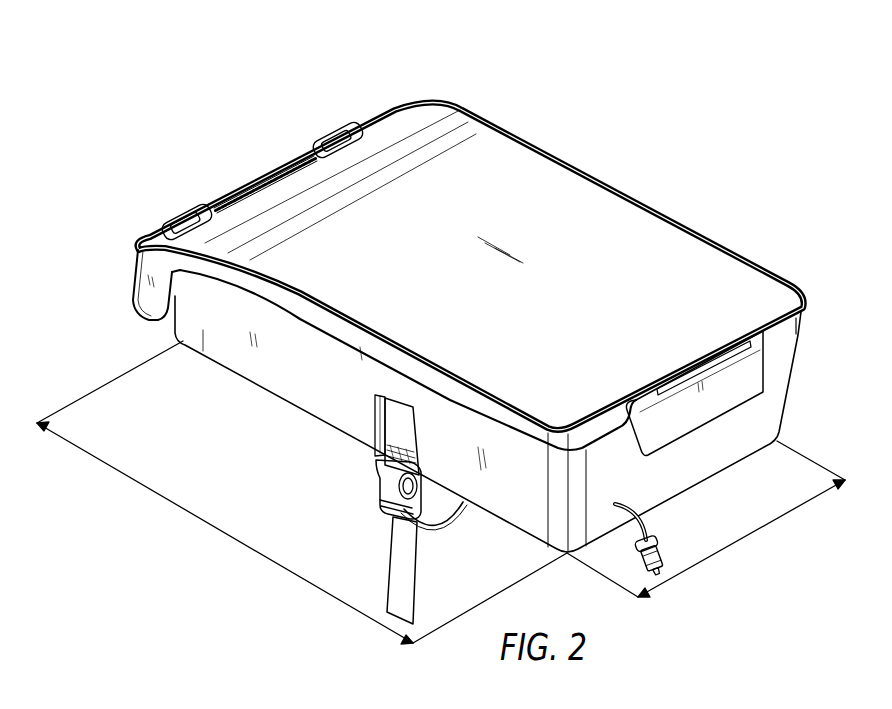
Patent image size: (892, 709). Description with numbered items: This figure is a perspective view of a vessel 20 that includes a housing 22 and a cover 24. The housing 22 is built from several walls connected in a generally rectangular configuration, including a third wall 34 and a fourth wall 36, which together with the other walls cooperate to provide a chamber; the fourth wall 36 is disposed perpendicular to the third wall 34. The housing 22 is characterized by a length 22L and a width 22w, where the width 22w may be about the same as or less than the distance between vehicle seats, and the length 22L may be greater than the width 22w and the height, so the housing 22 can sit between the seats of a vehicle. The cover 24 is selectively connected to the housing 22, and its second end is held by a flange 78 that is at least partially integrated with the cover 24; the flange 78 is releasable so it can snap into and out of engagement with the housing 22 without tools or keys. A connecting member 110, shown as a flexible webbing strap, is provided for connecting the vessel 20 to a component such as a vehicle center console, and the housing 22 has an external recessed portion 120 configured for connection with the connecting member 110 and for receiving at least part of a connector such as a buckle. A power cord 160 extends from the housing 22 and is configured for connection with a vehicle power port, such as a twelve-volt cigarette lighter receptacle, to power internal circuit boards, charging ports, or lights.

The vessel 20 is at (700, 105).
The housing 22 is at (540, 553).
The length 22L is at (193, 517).
The width 22w is at (737, 543).
The cover 24 is at (556, 178).
The third wall 34 is at (753, 437).
The fourth wall 36 is at (204, 332).
The flange 78 is at (737, 368).
The connecting member 110 is at (457, 546).
The external recessed portion 120 is at (397, 390).
The power cord 160 is at (670, 548).